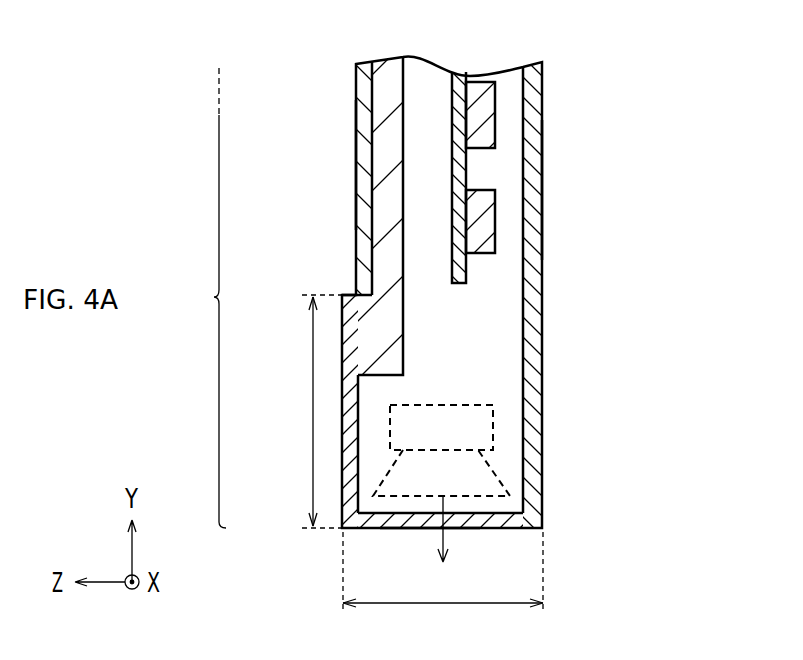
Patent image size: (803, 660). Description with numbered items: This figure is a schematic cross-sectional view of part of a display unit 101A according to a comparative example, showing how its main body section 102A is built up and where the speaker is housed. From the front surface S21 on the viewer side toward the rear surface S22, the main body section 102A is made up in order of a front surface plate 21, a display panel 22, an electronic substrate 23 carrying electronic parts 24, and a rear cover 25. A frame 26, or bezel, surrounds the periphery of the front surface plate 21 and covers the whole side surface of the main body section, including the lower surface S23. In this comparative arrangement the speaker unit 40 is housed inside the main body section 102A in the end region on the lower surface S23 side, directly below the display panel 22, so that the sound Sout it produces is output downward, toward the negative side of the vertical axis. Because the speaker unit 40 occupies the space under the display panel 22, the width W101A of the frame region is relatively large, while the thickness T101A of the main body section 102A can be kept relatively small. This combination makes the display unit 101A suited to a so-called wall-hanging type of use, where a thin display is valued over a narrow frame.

The display unit 101A is at (611, 46).
The main body section 102A is at (191, 298).
The front surface plate 21 is at (358, 262).
The display panel 22 is at (388, 64).
The electronic substrate 23 is at (453, 78).
The electronic parts 24 is at (481, 108).
The rear cover 25 is at (527, 82).
The frame 26 is at (508, 520).
The speaker unit 40 is at (494, 424).
The front surface S21 is at (349, 165).
The rear surface S22 is at (548, 190).
The lower surface S23 is at (360, 545).
The width of the frame region W101A is at (291, 411).
The thickness of the main body section T101A is at (443, 586).
The sound Sout is at (442, 547).